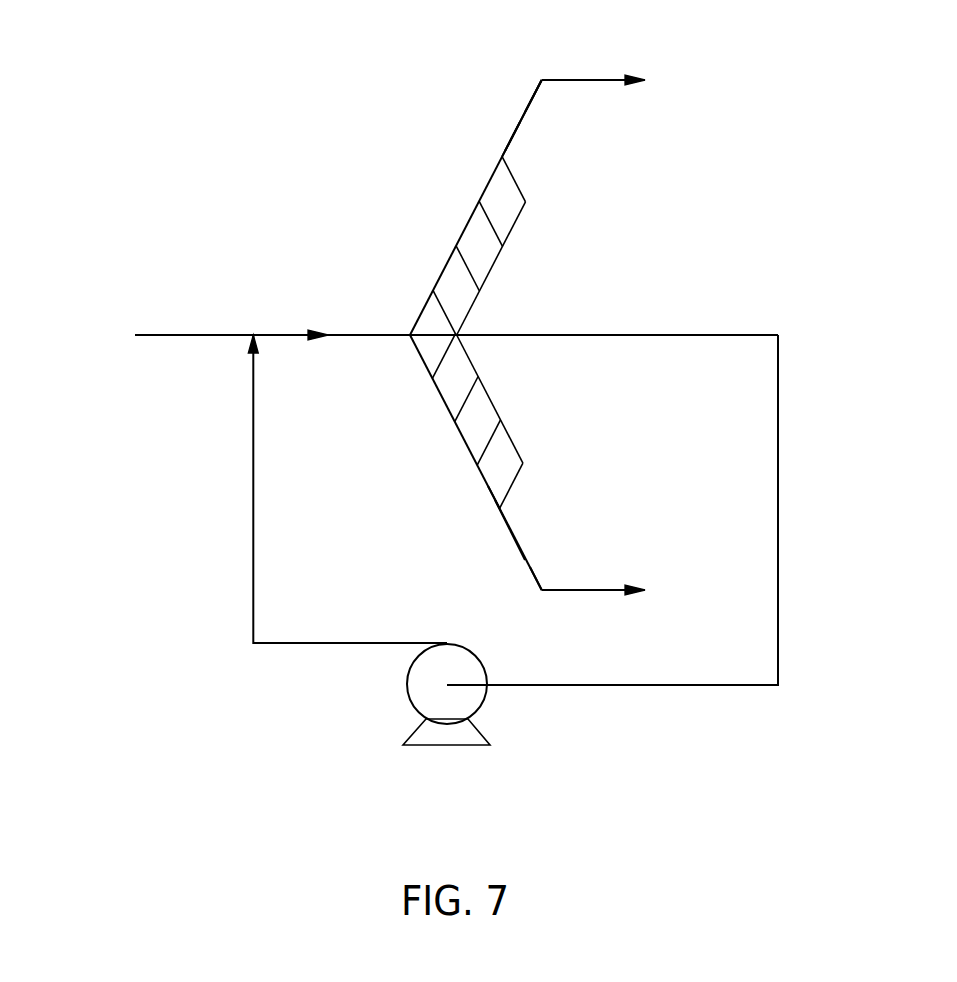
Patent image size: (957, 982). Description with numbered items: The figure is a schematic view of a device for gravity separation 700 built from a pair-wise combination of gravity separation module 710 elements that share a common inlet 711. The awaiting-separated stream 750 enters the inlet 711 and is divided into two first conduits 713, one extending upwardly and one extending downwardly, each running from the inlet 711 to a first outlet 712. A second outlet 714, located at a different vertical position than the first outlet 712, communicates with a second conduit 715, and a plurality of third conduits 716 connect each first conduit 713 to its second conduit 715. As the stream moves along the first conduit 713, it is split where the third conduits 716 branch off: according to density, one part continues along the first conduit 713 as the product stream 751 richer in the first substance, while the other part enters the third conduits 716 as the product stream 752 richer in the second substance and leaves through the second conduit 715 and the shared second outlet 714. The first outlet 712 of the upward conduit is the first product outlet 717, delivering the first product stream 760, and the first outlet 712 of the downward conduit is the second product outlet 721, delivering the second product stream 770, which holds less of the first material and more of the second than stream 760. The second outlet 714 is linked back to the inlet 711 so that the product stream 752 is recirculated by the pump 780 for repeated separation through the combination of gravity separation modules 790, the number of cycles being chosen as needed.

The device for gravity separation 700 is at (820, 92).
The gravity separation module 710 is at (445, 335).
The inlet 711 is at (363, 335).
The first outlet 712 is at (511, 139).
The first conduit 713 is at (468, 220).
The second outlet 714 is at (575, 335).
The second conduit 715 is at (515, 224).
The third conduit 716 is at (515, 176).
The first product outlet 717 is at (523, 122).
The second product outlet 721 is at (538, 587).
The awaiting-separated stream 750 is at (180, 335).
The product stream containing higher concentration of first substance 751 is at (533, 92).
The product stream containing higher concentration of second substance 752 is at (505, 500).
The first product stream 760 is at (592, 80).
The second product stream 770 is at (592, 592).
The pump 780 is at (445, 748).
The combination of gravity separation modules 790 is at (331, 378).